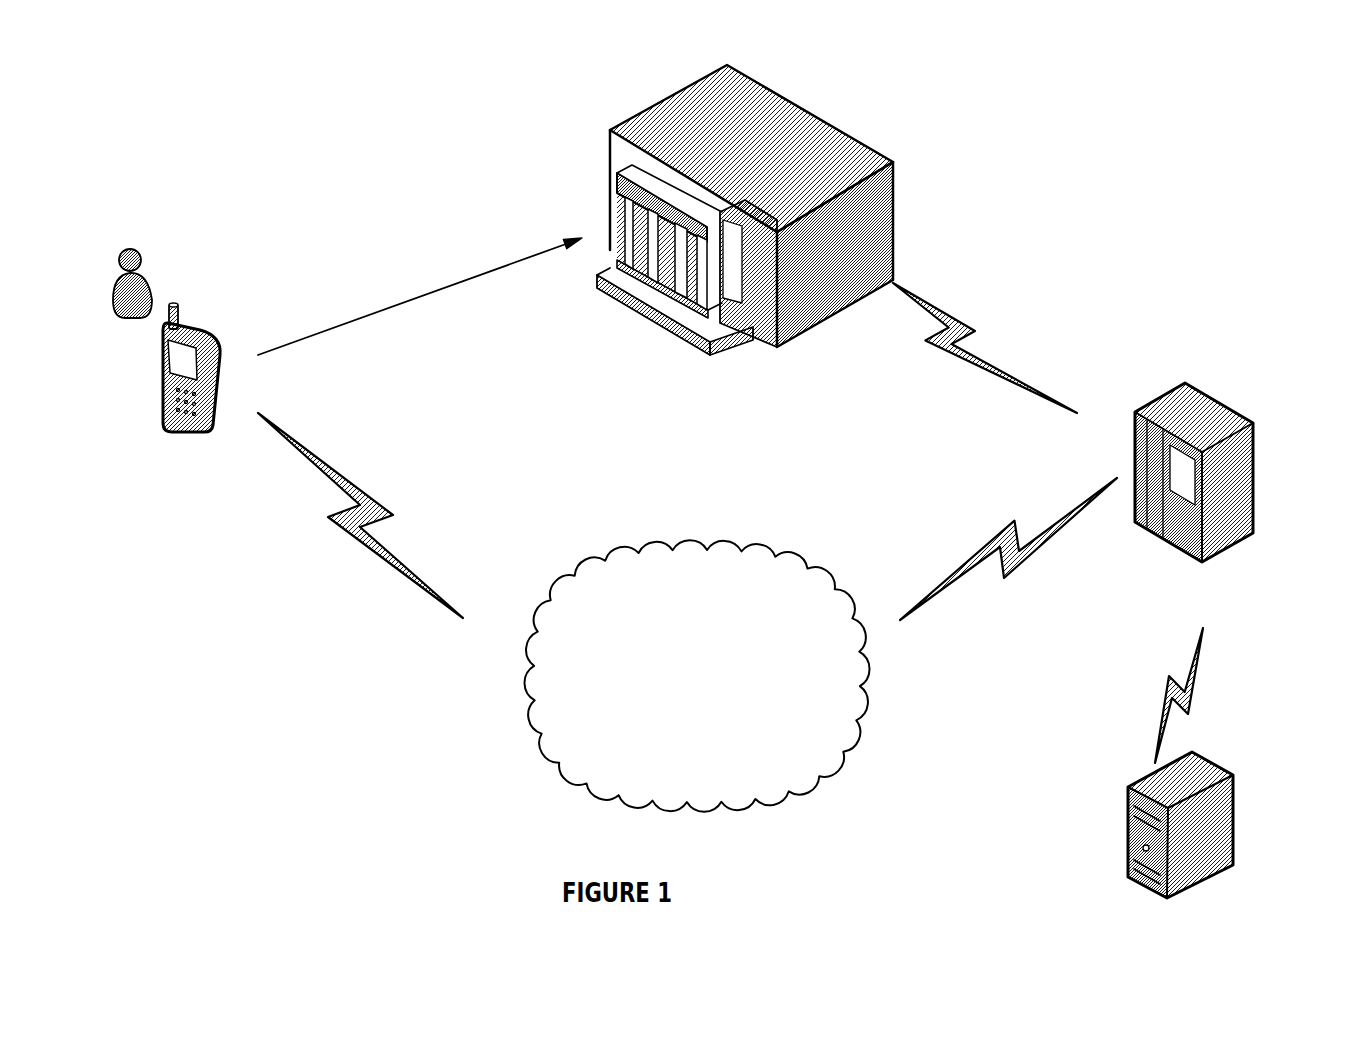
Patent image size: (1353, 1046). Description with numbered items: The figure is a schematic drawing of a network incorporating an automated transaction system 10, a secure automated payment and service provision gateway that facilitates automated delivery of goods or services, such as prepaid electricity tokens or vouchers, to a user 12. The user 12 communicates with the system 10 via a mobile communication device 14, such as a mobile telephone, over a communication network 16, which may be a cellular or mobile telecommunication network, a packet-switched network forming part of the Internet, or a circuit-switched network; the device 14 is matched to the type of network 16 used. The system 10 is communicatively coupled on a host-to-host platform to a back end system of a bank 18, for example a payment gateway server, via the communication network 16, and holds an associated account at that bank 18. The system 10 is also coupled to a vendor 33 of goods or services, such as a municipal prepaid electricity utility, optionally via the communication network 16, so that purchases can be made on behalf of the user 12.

The automated transaction system 10 is at (1210, 398).
The user 12 is at (152, 290).
The mobile communication device 14 is at (218, 345).
The communication network 16 is at (802, 572).
The bank 18 is at (817, 135).
The vendor 33 is at (1215, 812).